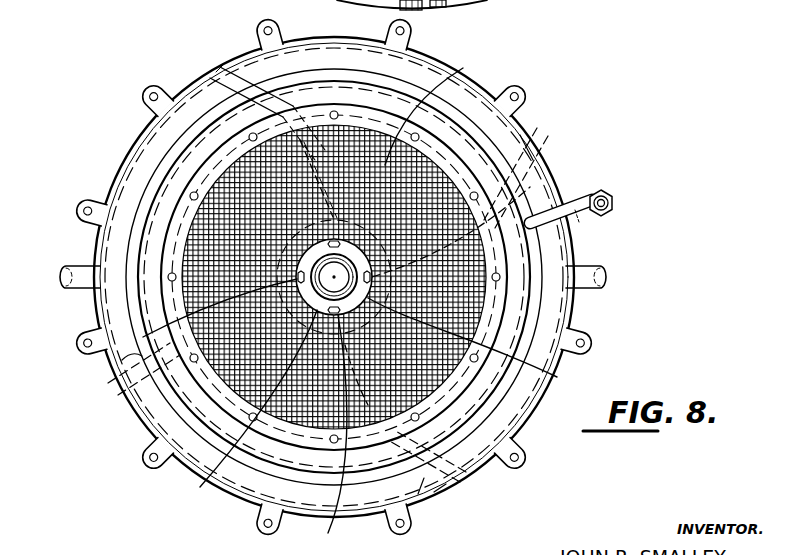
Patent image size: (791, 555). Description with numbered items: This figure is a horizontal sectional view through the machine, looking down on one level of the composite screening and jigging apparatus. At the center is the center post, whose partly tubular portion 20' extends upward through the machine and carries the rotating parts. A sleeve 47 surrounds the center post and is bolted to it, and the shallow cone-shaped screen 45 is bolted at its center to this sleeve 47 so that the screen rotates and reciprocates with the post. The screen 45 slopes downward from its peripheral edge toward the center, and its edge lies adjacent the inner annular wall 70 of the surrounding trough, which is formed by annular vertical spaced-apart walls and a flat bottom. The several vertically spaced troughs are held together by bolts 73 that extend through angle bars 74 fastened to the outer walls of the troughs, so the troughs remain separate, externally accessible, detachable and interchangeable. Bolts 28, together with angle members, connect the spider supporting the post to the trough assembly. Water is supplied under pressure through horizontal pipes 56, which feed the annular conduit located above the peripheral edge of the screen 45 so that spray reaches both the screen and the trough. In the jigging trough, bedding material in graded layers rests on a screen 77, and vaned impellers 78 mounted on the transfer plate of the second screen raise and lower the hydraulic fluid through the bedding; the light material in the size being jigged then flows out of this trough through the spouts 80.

The tubular portion of center post 20' is at (230, 391).
The bolts 28 is at (368, 8).
The screen 45 is at (395, 135).
The sleeve 47 is at (466, 296).
The horizontal pipes 56 is at (578, 217).
The annular vertical wall 70 is at (551, 178).
The bolts 73 is at (261, 25).
The angle bars 74 is at (150, 88).
The screen 77 is at (320, 431).
The vaned impellers 78 is at (232, 57).
The spouts 80 is at (600, 275).